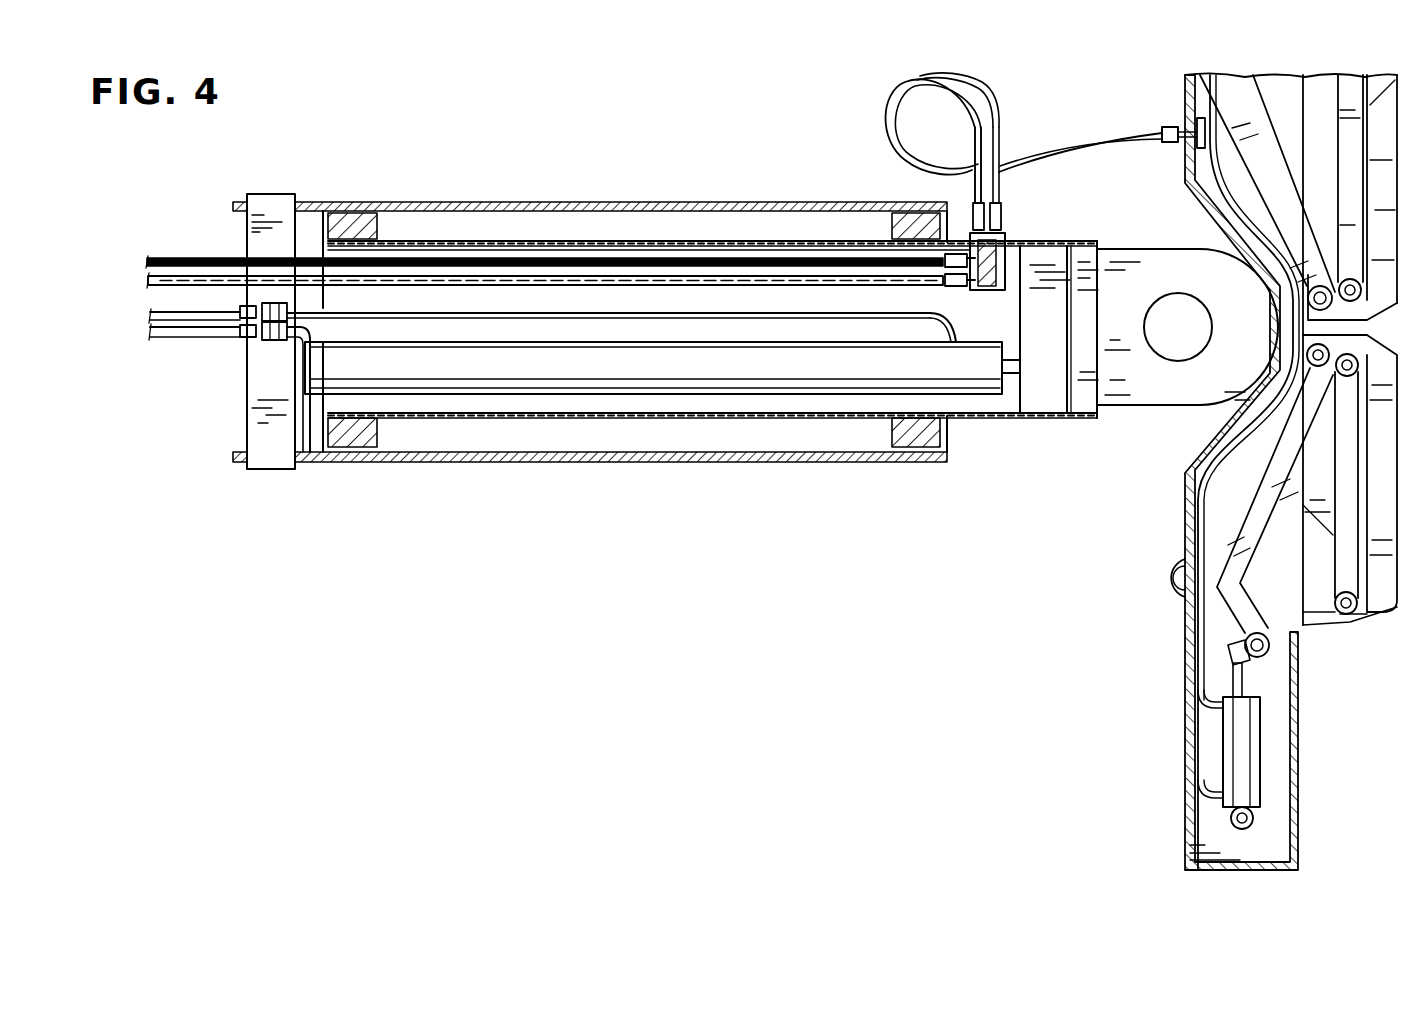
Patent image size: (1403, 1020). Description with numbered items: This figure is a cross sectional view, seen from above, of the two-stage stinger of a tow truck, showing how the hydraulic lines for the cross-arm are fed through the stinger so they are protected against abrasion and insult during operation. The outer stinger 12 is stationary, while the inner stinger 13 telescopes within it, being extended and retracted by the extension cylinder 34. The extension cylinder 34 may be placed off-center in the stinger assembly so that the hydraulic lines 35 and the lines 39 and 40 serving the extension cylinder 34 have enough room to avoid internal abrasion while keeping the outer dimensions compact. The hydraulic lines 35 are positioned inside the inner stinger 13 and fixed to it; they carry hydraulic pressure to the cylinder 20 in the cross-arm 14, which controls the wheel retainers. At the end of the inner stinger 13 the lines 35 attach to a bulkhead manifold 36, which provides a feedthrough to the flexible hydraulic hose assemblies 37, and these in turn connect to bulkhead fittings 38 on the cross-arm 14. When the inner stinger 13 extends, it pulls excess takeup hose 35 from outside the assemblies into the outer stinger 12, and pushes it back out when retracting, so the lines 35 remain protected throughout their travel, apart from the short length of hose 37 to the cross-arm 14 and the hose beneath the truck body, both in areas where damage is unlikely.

The outer stinger 12 is at (346, 201).
The inner stinger 13 is at (430, 245).
The cross-arm 14 is at (1186, 93).
The cylinder 20 is at (1237, 746).
The extension cylinder 34 is at (583, 342).
The hydraulic lines 35 is at (517, 270).
The bulkhead manifold 36 is at (963, 233).
The flexible hydraulic hose assemblies 37 is at (1003, 189).
The bulkhead fittings 38 is at (1162, 127).
The line to extension cylinder 39 is at (305, 342).
The line to extension cylinder 40 is at (643, 320).